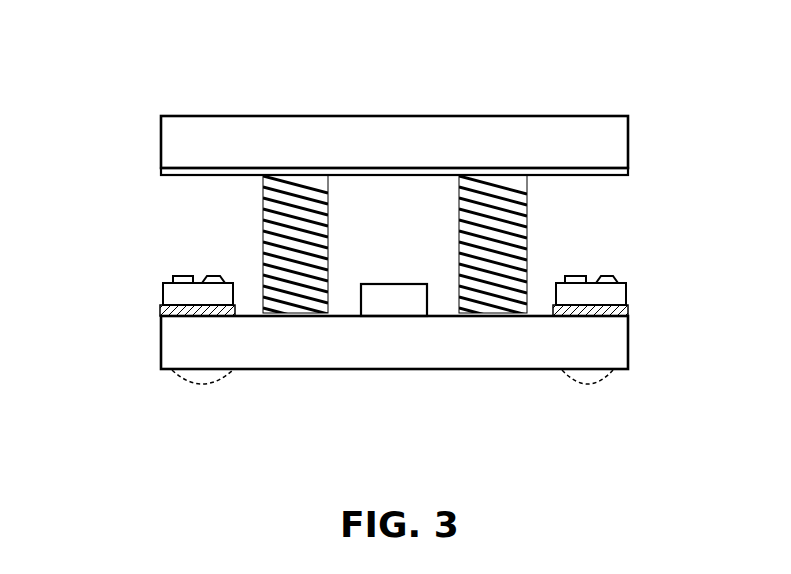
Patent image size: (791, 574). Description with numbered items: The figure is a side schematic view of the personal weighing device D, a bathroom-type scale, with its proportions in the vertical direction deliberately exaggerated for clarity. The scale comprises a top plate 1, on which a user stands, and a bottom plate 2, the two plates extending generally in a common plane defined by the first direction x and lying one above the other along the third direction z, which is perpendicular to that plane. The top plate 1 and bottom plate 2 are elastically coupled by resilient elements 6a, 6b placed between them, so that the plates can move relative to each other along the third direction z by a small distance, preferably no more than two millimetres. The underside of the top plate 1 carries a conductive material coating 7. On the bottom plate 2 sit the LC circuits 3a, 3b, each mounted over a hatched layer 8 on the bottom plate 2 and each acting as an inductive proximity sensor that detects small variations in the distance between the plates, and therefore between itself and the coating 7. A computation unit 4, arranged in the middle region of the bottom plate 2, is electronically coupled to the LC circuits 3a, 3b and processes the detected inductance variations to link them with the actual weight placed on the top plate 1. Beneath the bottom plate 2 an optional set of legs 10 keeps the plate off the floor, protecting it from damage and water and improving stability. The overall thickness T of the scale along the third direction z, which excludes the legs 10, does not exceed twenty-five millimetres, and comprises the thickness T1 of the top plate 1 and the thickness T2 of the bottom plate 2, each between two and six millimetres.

The top plate 1 is at (629, 131).
The bottom plate 2 is at (629, 351).
The LC circuit 3a is at (622, 275).
The LC circuit 3b is at (165, 275).
The computation unit 4 is at (387, 296).
The resilient element 6a is at (493, 280).
The resilient element 6b is at (295, 282).
The conductive material coating 7 is at (160, 171).
The bonding layer 8 is at (161, 312).
The legs 10 is at (193, 387).
The personal weighing device D is at (261, 90).
The overall thickness T is at (161, 116).
The thickness of the top plate T1 is at (161, 168).
The thickness of the bottom plate T2 is at (161, 316).
The first direction x is at (421, 490).
The third direction z is at (729, 274).